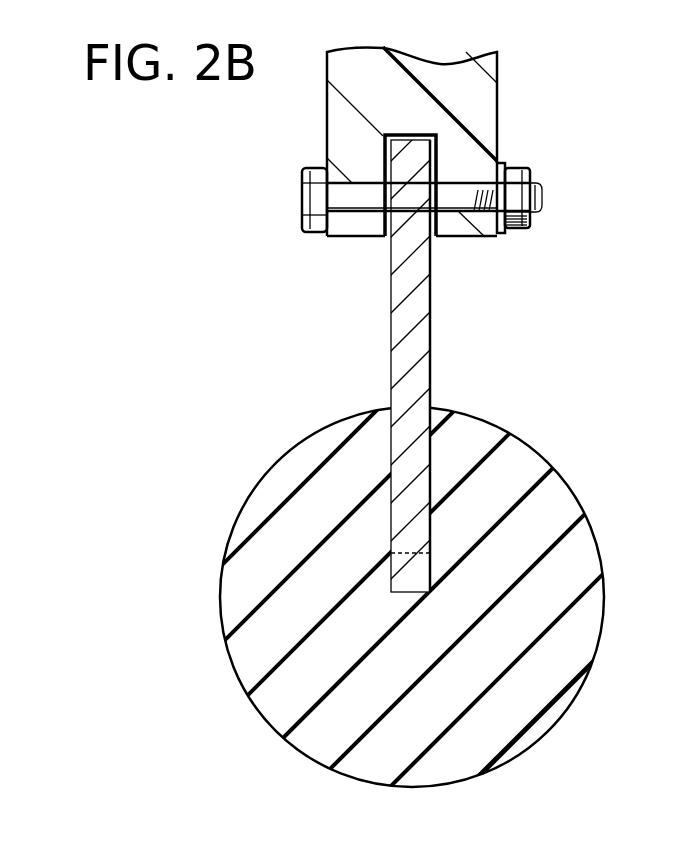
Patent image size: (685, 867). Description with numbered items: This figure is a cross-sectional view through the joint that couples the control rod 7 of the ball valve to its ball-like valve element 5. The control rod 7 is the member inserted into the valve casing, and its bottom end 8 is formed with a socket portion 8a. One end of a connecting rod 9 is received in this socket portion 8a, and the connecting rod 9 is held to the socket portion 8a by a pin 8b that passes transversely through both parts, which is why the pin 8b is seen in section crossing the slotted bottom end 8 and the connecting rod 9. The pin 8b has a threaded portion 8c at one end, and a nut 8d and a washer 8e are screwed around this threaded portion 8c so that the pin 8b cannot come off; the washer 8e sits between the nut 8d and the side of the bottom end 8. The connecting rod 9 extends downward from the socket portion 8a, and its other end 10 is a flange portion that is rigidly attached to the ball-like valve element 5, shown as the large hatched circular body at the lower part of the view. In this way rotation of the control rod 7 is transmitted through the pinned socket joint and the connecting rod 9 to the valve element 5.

The ball-like valve element 5 is at (557, 507).
The control rod 7 is at (487, 93).
The bottom end of the control rod 8 is at (487, 120).
The socket portion 8a is at (436, 226).
The pin 8b is at (303, 205).
The threaded portion 8c is at (543, 215).
The nut 8d is at (517, 198).
The washer 8e is at (505, 166).
The connecting rod 9 is at (430, 368).
The other end of the connecting rod 10 is at (410, 577).